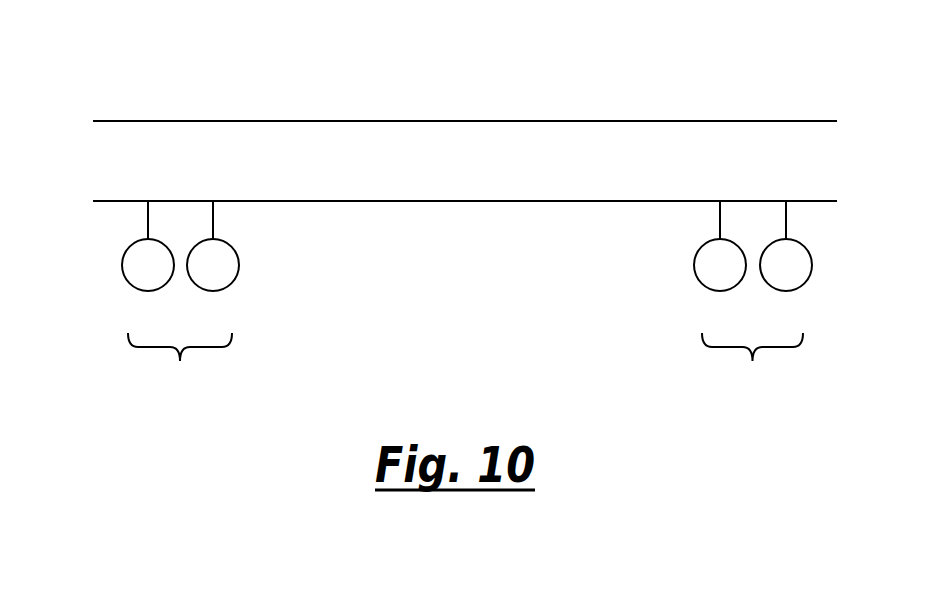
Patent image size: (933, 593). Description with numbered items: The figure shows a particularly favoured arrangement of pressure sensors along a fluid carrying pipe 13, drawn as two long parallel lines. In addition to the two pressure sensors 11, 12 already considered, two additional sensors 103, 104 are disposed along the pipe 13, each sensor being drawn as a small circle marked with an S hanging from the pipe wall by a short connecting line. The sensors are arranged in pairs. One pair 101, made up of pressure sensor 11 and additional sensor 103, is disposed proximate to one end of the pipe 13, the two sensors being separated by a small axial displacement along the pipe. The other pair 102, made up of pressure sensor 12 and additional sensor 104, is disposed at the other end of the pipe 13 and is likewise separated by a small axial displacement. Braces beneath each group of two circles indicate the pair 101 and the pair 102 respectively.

The fluid carrying pipe 13 is at (529, 107).
The pressure sensor 11 is at (114, 280).
The additional sensor 103 is at (251, 280).
The pair of pressure sensors 101 is at (180, 365).
The pressure sensor 12 is at (687, 285).
The additional sensor 104 is at (822, 284).
The pair of pressure sensors 102 is at (752, 365).